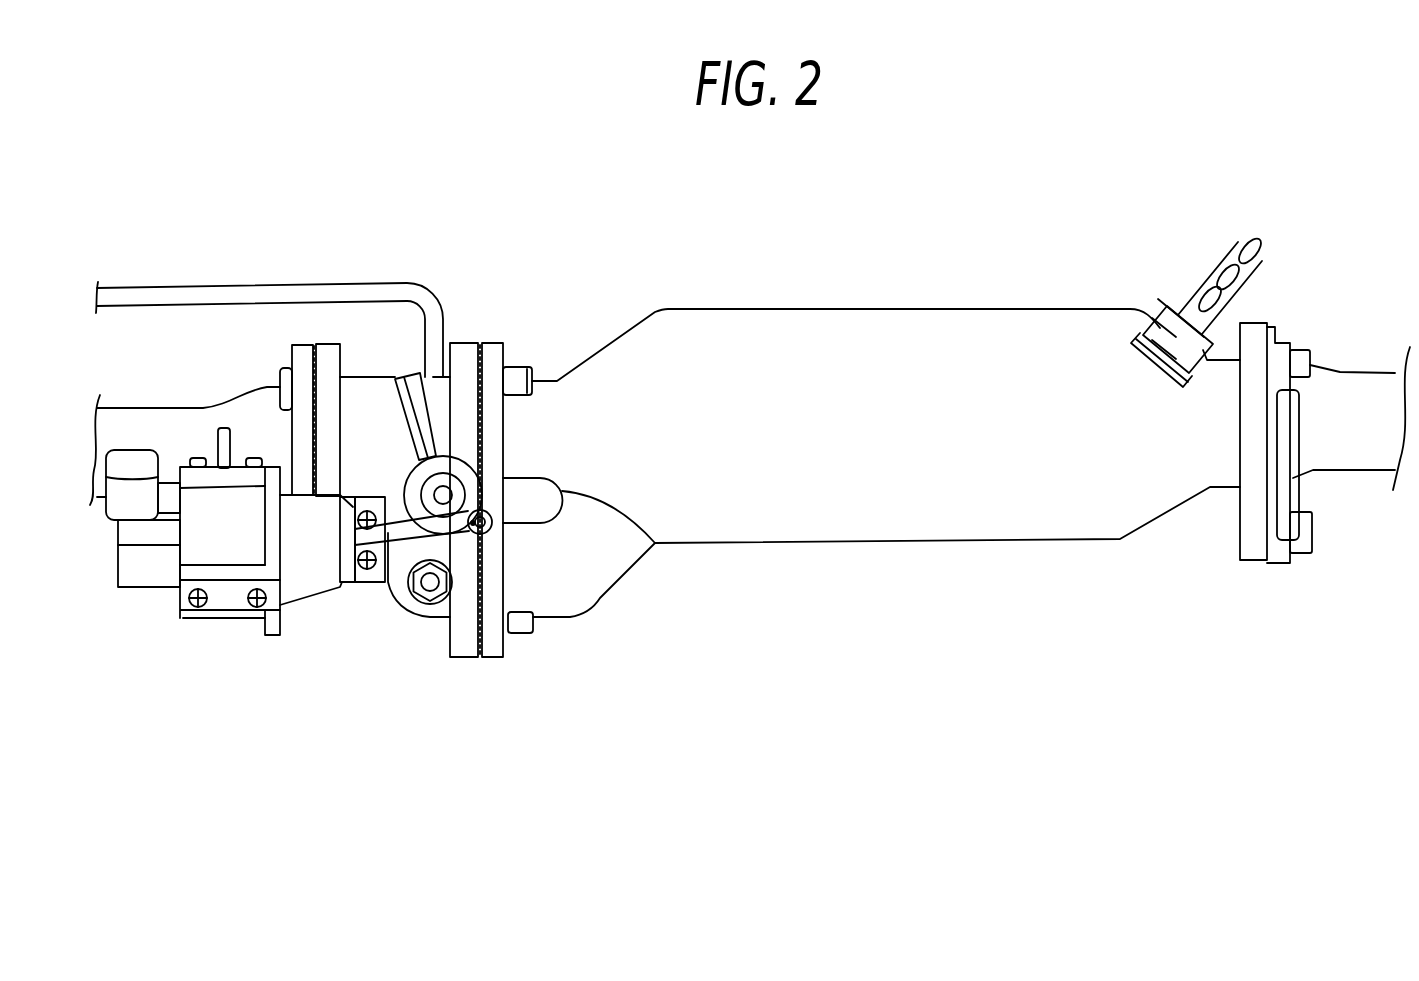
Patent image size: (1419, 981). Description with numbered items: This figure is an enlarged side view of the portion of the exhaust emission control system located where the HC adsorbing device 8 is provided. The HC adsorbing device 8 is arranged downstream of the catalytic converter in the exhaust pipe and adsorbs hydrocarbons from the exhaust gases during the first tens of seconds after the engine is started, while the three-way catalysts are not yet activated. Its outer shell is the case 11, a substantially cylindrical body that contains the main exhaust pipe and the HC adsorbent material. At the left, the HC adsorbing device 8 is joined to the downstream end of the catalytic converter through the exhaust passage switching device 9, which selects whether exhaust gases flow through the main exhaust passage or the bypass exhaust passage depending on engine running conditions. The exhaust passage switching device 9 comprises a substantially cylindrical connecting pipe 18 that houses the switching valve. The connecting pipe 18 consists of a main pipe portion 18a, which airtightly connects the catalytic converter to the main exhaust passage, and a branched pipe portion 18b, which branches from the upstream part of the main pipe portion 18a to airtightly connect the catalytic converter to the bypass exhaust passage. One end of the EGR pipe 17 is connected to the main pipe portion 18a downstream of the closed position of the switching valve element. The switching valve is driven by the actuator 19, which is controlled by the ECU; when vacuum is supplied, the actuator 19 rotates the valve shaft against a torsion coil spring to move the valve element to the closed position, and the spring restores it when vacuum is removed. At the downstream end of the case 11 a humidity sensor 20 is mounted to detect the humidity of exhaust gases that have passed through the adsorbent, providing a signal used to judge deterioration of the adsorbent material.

The HC adsorbing device 8 is at (870, 298).
The exhaust passage switching device 9 is at (393, 322).
The case 11 is at (945, 545).
The EGR pipe 17 is at (185, 288).
The connecting pipe 18 is at (378, 373).
The main pipe portion 18a is at (393, 392).
The branched pipe portion 18b is at (385, 598).
The actuator 19 is at (227, 555).
The humidity sensor 20 is at (1228, 270).